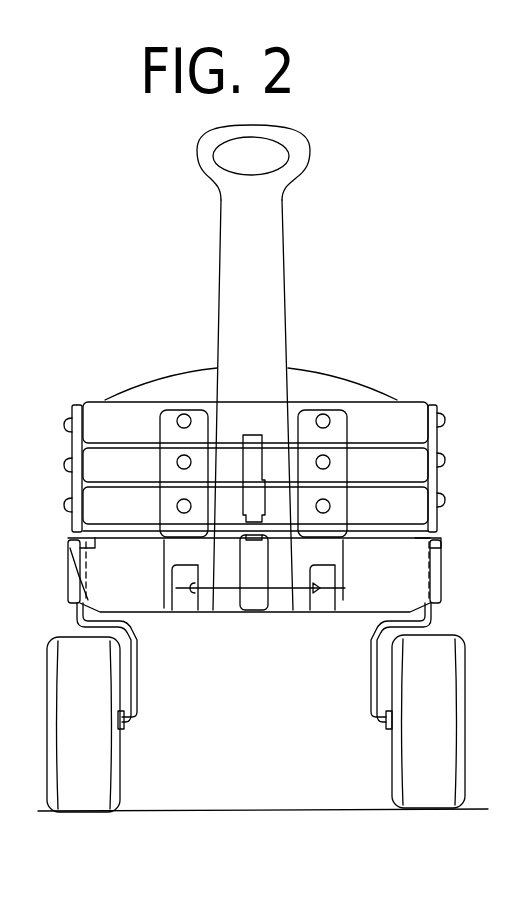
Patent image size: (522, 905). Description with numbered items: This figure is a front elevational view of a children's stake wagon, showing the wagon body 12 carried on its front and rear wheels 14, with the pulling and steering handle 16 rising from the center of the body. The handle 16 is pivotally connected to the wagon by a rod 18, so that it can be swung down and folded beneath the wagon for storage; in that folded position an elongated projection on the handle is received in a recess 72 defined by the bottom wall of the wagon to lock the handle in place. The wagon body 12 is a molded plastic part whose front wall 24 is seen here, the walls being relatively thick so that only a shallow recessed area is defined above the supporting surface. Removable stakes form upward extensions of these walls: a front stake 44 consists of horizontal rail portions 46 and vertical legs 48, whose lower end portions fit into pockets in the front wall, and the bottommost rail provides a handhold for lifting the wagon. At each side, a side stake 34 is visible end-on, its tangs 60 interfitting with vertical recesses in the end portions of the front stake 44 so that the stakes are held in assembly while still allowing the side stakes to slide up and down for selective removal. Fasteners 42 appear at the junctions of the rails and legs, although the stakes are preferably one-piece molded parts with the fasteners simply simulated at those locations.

The wagon body 12 is at (152, 598).
The front and rear wheels 14 is at (415, 745).
The pulling and steering handle 16 is at (243, 310).
The rod 18 is at (282, 605).
The front wall 24 is at (388, 579).
The stake 34 is at (437, 478).
The fasteners 42 is at (184, 420).
The stake 44 is at (98, 401).
The horizontal rail portions 46 is at (403, 507).
The vertical legs 48 is at (342, 453).
The tangs 60 is at (68, 462).
The recess 72 is at (243, 612).